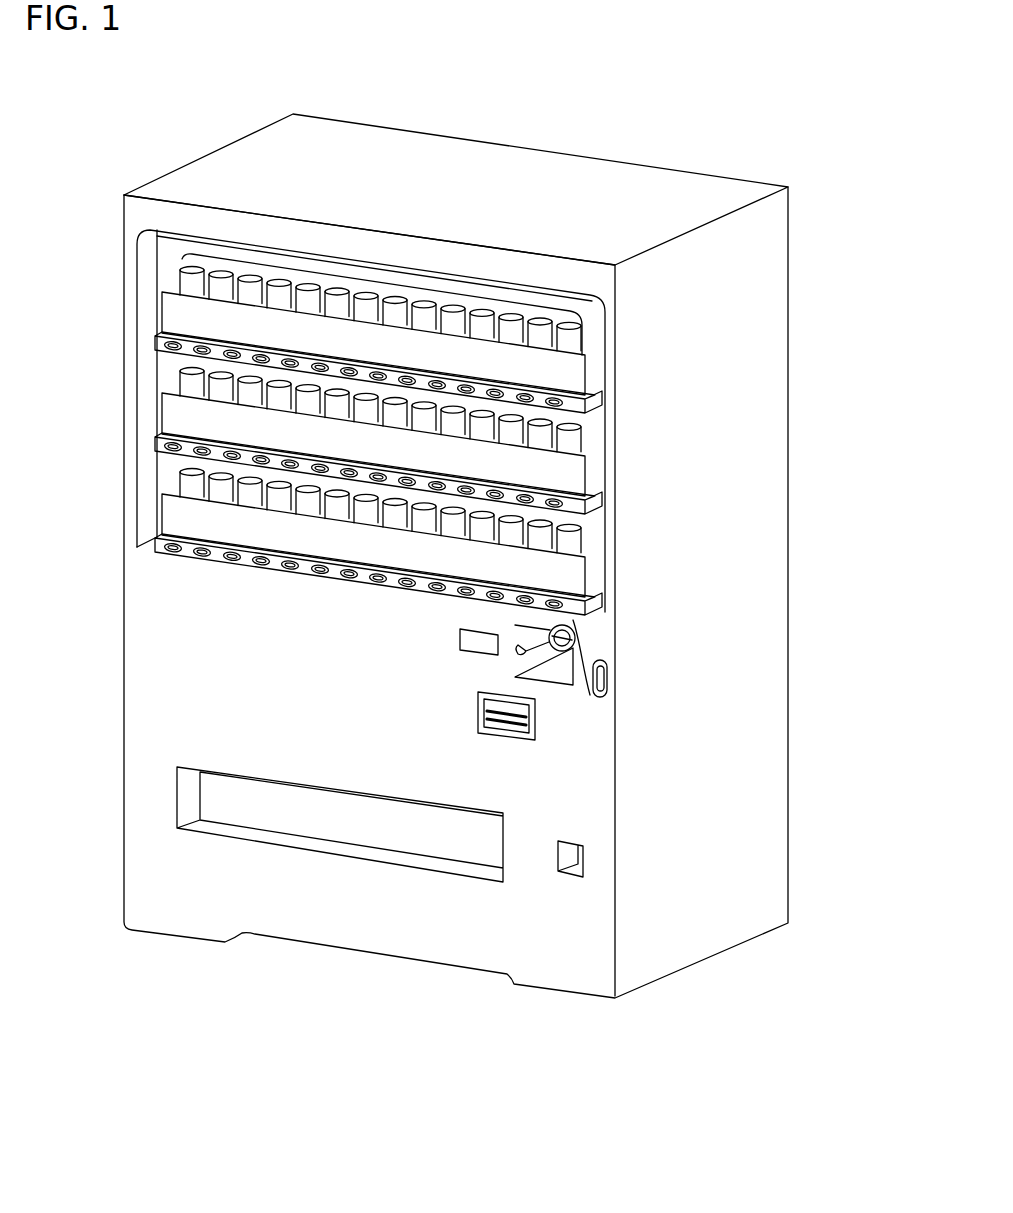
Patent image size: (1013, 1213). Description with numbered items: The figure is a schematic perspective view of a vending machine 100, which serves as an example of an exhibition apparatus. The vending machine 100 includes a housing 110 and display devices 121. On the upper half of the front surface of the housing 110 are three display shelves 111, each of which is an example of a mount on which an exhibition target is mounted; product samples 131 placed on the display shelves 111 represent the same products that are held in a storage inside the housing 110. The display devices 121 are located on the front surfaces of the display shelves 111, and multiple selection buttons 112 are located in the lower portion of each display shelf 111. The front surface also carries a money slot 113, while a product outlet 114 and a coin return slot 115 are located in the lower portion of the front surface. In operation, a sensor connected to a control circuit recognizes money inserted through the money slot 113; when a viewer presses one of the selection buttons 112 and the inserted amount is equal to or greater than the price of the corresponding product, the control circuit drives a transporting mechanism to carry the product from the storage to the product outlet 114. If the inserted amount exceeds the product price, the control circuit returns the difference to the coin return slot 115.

The vending machine 100 is at (460, 587).
The housing 110 is at (770, 838).
The display shelf 111 is at (600, 403).
The selection button 112 is at (446, 441).
The money slot 113 is at (575, 747).
The product outlet 114 is at (222, 806).
The coin return slot 115 is at (575, 860).
The display device 121 is at (578, 363).
The product sample 131 is at (380, 282).